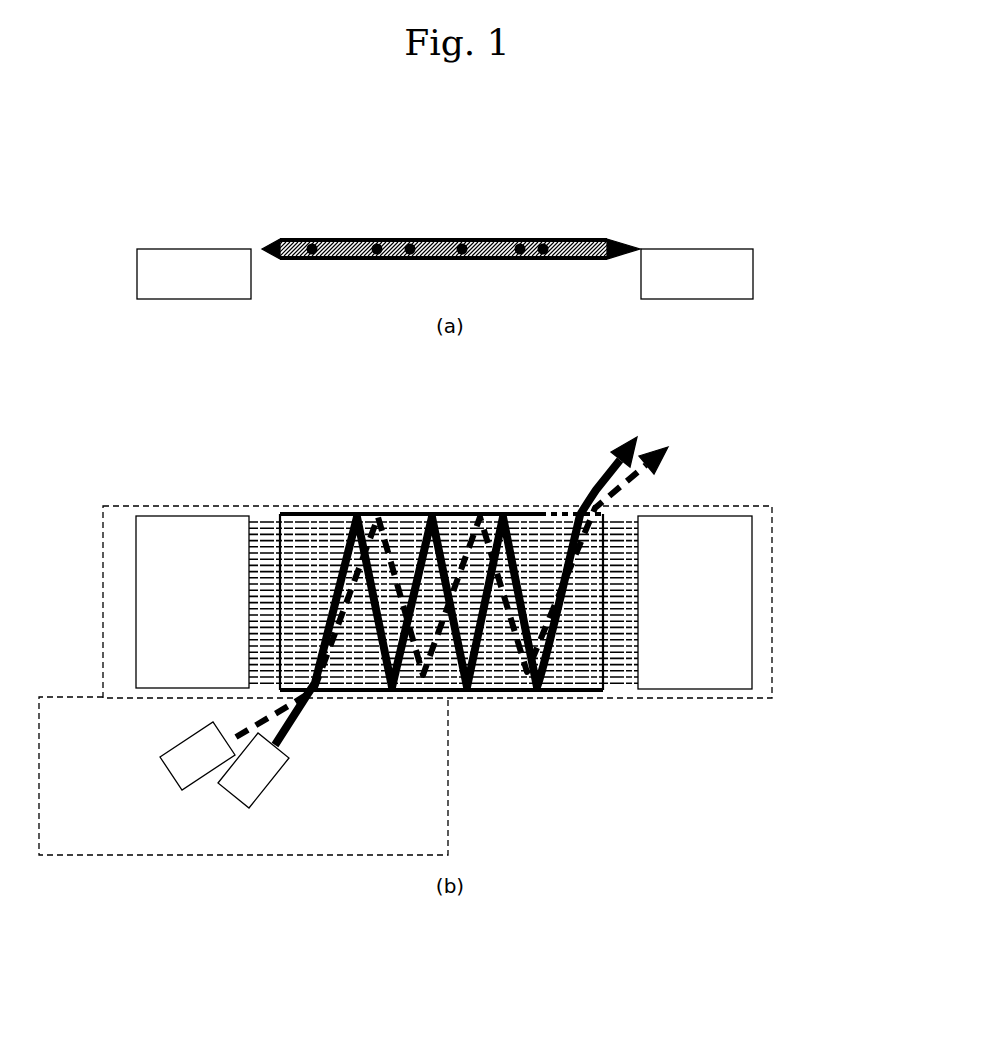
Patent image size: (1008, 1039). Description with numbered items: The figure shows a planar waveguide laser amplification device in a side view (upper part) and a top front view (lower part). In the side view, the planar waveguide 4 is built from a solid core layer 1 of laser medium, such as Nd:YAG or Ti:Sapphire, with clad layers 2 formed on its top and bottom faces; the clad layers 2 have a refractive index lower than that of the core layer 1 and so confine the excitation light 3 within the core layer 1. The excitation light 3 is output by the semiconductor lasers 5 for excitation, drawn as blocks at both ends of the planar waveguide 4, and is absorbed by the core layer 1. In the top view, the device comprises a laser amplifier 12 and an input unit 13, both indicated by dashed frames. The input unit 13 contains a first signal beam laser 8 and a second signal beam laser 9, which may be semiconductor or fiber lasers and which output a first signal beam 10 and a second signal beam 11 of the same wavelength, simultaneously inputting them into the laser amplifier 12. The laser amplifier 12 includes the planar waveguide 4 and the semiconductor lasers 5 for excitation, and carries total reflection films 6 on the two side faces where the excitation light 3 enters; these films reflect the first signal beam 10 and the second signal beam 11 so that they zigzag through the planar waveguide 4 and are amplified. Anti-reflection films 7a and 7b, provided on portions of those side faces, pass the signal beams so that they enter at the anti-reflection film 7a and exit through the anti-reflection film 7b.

The core layer 1 is at (607, 239).
The clad layers 2 is at (537, 239).
The excitation light 3 is at (267, 242).
The planar waveguide 4 is at (470, 238).
The semiconductor lasers for excitation 5 is at (172, 249).
The total reflection films 6 is at (394, 514).
The anti-reflection film 7a is at (330, 694).
The anti-reflection film 7b is at (565, 514).
The first signal beam laser 8 is at (238, 797).
The second signal beam laser 9 is at (160, 753).
The first signal beam 10 is at (637, 437).
The second signal beam 11 is at (668, 447).
The laser amplifier 12 is at (772, 646).
The input unit 13 is at (448, 854).